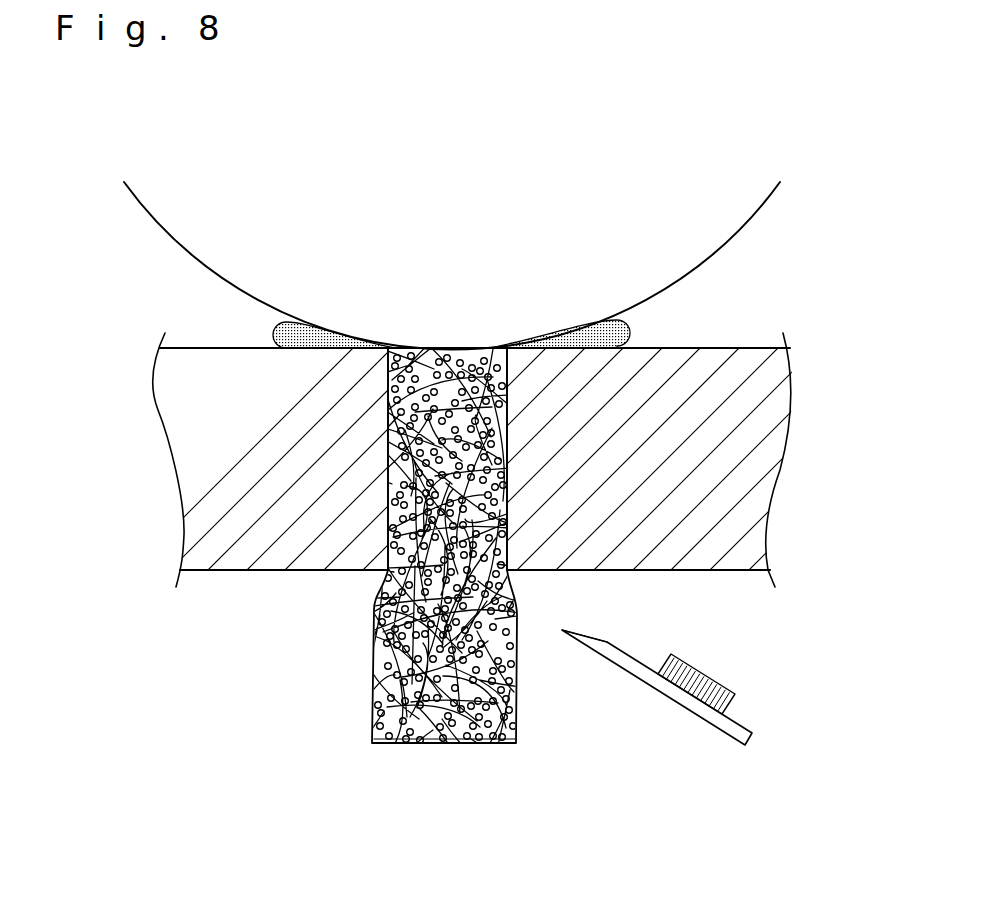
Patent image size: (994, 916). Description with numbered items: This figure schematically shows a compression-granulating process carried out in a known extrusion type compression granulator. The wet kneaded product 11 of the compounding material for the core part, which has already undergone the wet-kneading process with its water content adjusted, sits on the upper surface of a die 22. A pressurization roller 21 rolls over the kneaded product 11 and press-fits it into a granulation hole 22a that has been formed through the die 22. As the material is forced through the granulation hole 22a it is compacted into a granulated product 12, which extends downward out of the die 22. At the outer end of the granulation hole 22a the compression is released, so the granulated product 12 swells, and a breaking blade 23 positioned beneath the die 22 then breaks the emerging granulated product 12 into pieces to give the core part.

The pressurization roller 21 is at (730, 198).
The kneaded product 11 is at (633, 333).
The die 22 is at (735, 497).
The granulation hole 22a is at (507, 573).
The granulated product 12 is at (372, 678).
The breaking blade 23 is at (753, 735).